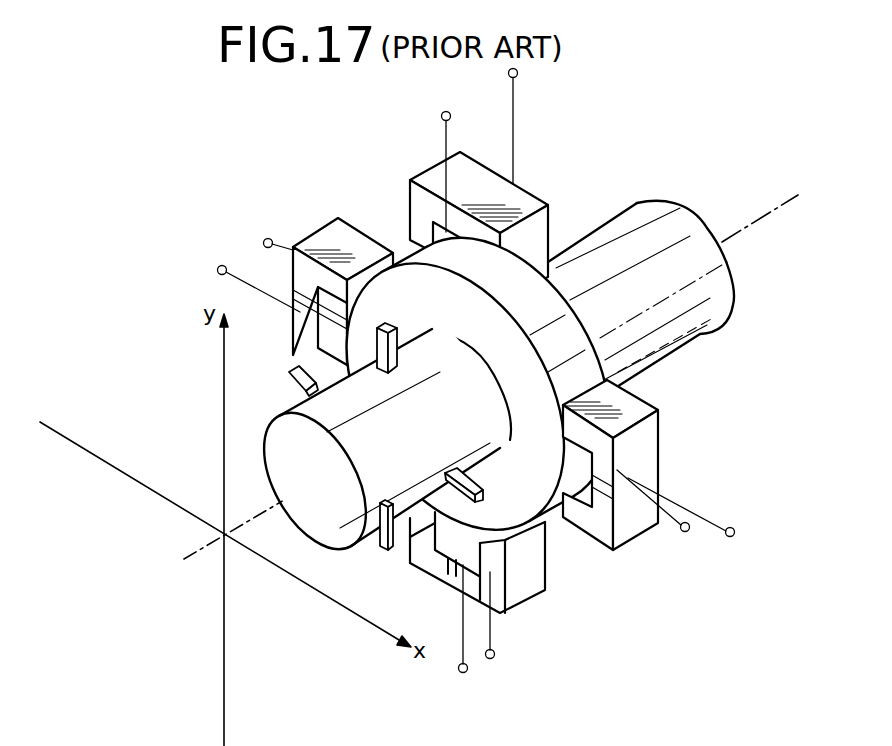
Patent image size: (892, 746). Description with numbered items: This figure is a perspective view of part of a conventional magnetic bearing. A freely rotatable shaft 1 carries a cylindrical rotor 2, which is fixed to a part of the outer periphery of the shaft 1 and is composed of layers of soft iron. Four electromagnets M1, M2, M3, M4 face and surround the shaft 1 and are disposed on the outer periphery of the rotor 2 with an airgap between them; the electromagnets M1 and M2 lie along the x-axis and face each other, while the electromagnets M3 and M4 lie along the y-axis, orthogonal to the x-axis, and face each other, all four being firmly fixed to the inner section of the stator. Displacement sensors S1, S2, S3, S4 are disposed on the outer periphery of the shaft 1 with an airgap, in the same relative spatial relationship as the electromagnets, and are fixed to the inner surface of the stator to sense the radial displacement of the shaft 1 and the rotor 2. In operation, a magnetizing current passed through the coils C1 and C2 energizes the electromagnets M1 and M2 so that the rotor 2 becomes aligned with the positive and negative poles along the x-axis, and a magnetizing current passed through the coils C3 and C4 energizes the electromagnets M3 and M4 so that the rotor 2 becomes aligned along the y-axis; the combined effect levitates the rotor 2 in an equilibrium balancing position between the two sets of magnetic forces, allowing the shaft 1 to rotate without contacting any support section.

The shaft 1 is at (635, 207).
The cylindrical rotor 2 is at (577, 323).
The electromagnet M1 is at (641, 407).
The electromagnet M2 is at (327, 228).
The electromagnet M3 is at (523, 201).
The electromagnet M4 is at (532, 587).
The coil C1 is at (641, 476).
The coil C2 is at (292, 300).
The coil C3 is at (477, 181).
The coil C4 is at (445, 573).
The displacement sensor S1 is at (486, 483).
The displacement sensor S2 is at (291, 381).
The displacement sensor S3 is at (398, 330).
The displacement sensor S4 is at (384, 552).